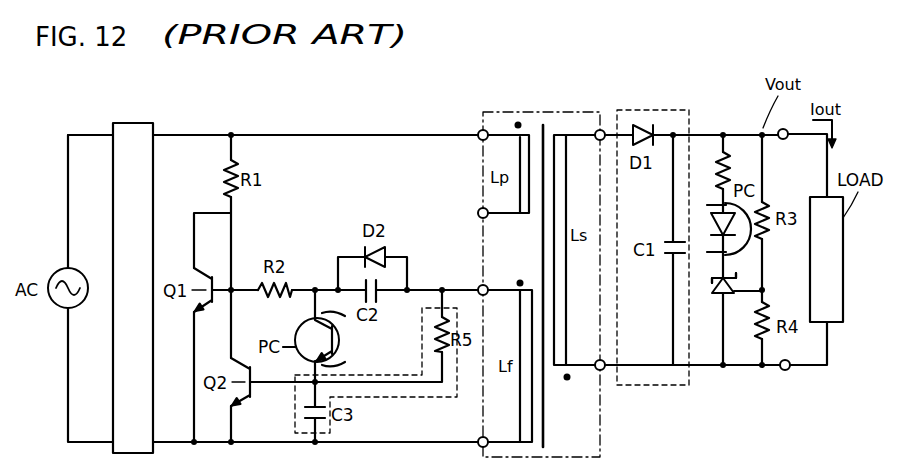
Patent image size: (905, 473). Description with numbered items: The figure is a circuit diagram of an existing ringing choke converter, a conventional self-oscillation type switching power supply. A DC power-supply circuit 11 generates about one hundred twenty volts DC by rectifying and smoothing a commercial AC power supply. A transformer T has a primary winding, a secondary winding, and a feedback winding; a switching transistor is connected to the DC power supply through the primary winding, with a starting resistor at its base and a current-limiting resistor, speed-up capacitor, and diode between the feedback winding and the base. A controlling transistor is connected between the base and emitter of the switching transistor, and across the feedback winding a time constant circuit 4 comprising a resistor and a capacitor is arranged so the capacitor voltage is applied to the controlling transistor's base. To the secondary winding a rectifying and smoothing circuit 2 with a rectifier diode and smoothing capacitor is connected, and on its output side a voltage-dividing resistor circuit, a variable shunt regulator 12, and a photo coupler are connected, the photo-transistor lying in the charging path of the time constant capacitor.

The DC power-supply circuit 11 is at (153, 124).
The rectifying and smoothing circuit 2 is at (689, 112).
The time constant circuit 4 is at (395, 399).
The variable shunt regulator 12 is at (718, 293).
The transformer T is at (538, 110).